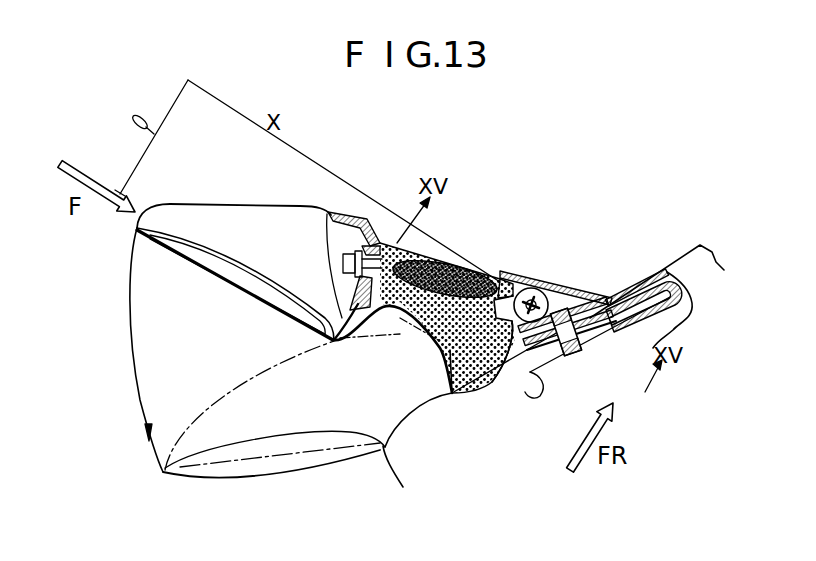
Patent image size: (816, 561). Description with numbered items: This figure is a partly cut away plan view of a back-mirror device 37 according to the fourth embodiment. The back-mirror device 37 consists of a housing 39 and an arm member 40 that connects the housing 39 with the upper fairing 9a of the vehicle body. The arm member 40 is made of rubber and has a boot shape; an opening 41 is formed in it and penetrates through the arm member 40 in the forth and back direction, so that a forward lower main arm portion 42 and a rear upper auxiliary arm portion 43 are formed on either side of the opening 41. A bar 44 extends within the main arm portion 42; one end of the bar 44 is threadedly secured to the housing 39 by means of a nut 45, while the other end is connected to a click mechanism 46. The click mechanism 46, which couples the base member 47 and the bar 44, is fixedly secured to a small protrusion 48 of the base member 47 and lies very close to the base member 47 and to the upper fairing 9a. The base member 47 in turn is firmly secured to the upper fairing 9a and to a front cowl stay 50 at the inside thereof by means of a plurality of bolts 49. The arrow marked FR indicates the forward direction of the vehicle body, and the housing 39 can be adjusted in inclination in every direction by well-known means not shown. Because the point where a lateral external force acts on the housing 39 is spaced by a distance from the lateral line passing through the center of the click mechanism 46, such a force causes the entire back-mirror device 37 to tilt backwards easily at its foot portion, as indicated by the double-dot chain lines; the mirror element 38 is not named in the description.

The upper fairing 9a is at (640, 282).
The back-mirror device 37 is at (500, 245).
The mirror glass 38 is at (240, 286).
The housing 39 is at (251, 202).
The arm member 40 is at (474, 380).
The opening 41 is at (447, 266).
The main arm portion 42 is at (505, 266).
The auxiliary arm portion 43 is at (438, 342).
The bar 44 is at (386, 300).
The nut 45 is at (350, 228).
The click mechanism 46 is at (538, 278).
The base member 47 is at (510, 343).
The small protrusion 48 is at (572, 290).
The bolts 49 is at (577, 357).
The front cowl stay 50 is at (660, 318).